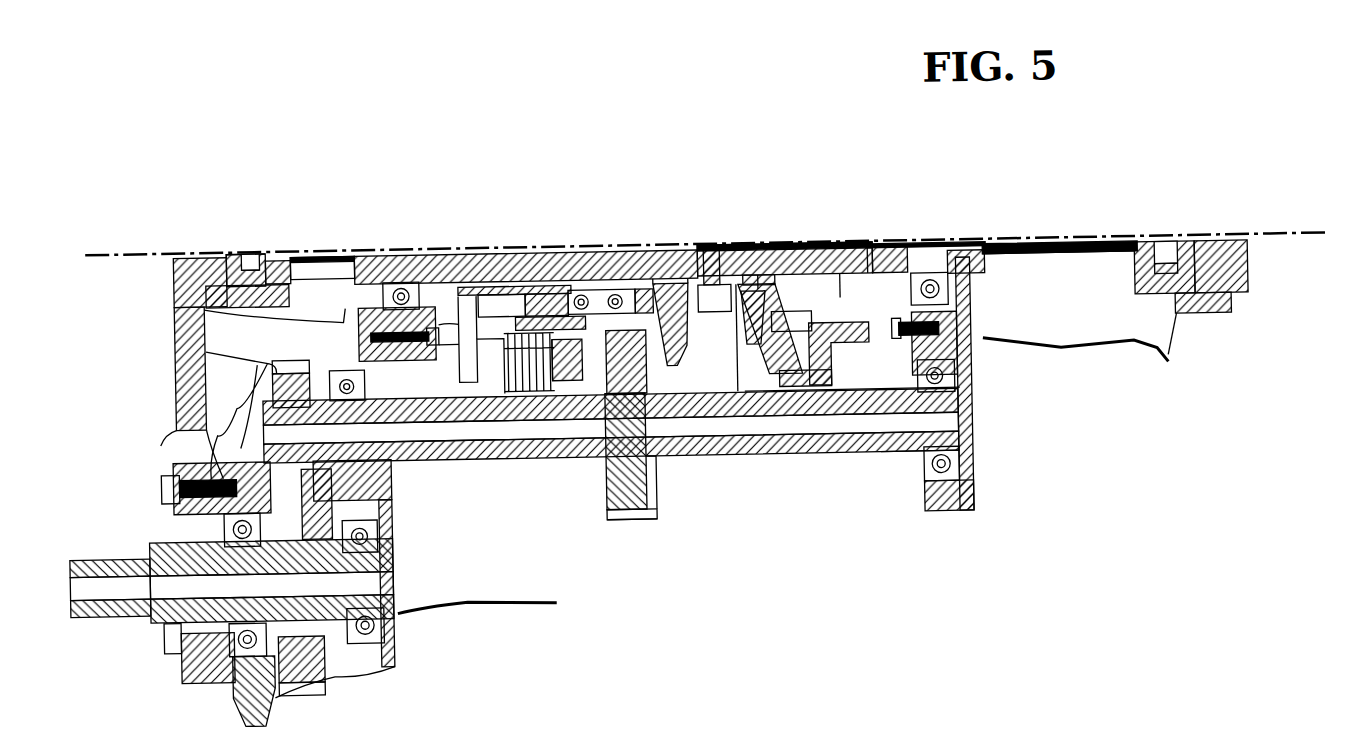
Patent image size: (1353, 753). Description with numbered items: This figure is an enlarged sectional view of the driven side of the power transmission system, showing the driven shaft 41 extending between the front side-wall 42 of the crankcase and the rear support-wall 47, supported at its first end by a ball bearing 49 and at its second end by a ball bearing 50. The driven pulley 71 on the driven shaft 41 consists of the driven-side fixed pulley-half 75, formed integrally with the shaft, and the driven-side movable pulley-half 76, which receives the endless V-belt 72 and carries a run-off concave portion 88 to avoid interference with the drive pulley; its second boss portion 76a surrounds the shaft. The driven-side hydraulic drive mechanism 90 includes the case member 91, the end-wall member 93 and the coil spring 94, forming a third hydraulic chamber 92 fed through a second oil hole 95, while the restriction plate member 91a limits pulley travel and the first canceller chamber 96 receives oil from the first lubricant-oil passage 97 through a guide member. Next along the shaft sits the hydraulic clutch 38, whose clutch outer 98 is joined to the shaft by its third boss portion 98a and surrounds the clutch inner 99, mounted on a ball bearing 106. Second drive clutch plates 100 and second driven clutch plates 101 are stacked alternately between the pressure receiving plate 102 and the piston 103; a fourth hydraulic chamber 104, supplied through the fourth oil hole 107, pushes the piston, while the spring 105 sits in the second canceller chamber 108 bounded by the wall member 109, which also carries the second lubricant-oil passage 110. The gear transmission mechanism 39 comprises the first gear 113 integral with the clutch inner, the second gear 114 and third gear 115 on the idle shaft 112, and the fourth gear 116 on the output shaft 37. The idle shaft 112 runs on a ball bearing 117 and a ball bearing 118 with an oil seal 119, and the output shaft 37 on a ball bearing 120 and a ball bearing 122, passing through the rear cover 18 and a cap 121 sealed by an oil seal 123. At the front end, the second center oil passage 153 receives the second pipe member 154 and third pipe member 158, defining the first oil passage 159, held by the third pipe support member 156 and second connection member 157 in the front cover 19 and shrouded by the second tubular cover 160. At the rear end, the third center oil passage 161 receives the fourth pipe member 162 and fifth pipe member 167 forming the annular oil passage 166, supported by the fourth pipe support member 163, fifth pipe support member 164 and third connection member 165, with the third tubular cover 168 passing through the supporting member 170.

The rear cover 18 is at (180, 348).
The front cover 19 is at (1205, 289).
The output shaft 37 is at (120, 620).
The hydraulic clutch 38 is at (463, 425).
The gear transmission mechanism 39 is at (670, 467).
The driven shaft 41 is at (681, 246).
The front side-wall 42 is at (984, 343).
The rear support-wall 47 is at (394, 608).
The ball bearing 49 is at (950, 244).
The ball bearing 50 is at (400, 259).
The driven pulley 71 is at (763, 428).
The endless V-belt 72 is at (740, 330).
The driven-side fixed pulley-half 75 is at (717, 250).
The driven-side movable pulley-half 76 is at (748, 239).
The second boss portion 76a is at (845, 243).
The run-off concave portion 88 is at (782, 428).
The driven-side hydraulic drive mechanism 90 is at (936, 512).
The case member 91 is at (867, 460).
The restriction plate member 91a is at (969, 392).
The third hydraulic chamber 92 is at (737, 448).
The end-wall member 93 is at (840, 345).
The coil spring 94 is at (820, 252).
The second oil hole 95 is at (775, 241).
The first canceller chamber 96 is at (828, 445).
The first lubricant-oil passage 97 is at (875, 253).
The clutch outer 98 is at (975, 302).
The third boss portion 98a is at (458, 242).
The clutch inner 99 is at (650, 375).
The second drive clutch plates 100 is at (523, 332).
The second driven clutch plates 101 is at (543, 332).
The pressure receiving plate 102 is at (598, 458).
The piston 103 is at (491, 243).
The fourth hydraulic chamber 104 is at (426, 242).
The spring 105 is at (565, 247).
The ball bearing 106 is at (621, 250).
The fourth oil hole 107 is at (516, 243).
The second canceller chamber 108 is at (445, 440).
The wall member 109 is at (370, 360).
The second lubricant-oil passage 110 is at (545, 244).
The idle shaft 112 is at (758, 458).
The first gear 113 is at (691, 250).
The second gear 114 is at (636, 516).
The third gear 115 is at (179, 330).
The fourth gear 116 is at (303, 677).
The ball bearing 117 is at (966, 474).
The ball bearing 118 is at (380, 478).
The oil seal 119 is at (272, 581).
The ball bearing 120 is at (394, 645).
The cap 121 is at (156, 510).
The ball bearing 122 is at (226, 679).
The oil seal 123 is at (172, 653).
The second center oil passage 153 is at (786, 237).
The second pipe member 154 is at (1050, 248).
The third pipe support member 156 is at (1215, 259).
The second connection member 157 is at (1255, 280).
The third pipe member 158 is at (1102, 254).
The first oil passage 159 is at (905, 242).
The second tubular cover 160 is at (1083, 254).
The third center oil passage 161 is at (603, 246).
The fourth pipe member 162 is at (370, 248).
The fourth pipe support member 163 is at (289, 286).
The fifth pipe support member 164 is at (240, 243).
The third connection member 165 is at (179, 273).
The annular oil passage 166 is at (260, 244).
The fifth pipe member 167 is at (285, 247).
The third tubular cover 168 is at (306, 239).
The supporting member 170 is at (348, 313).